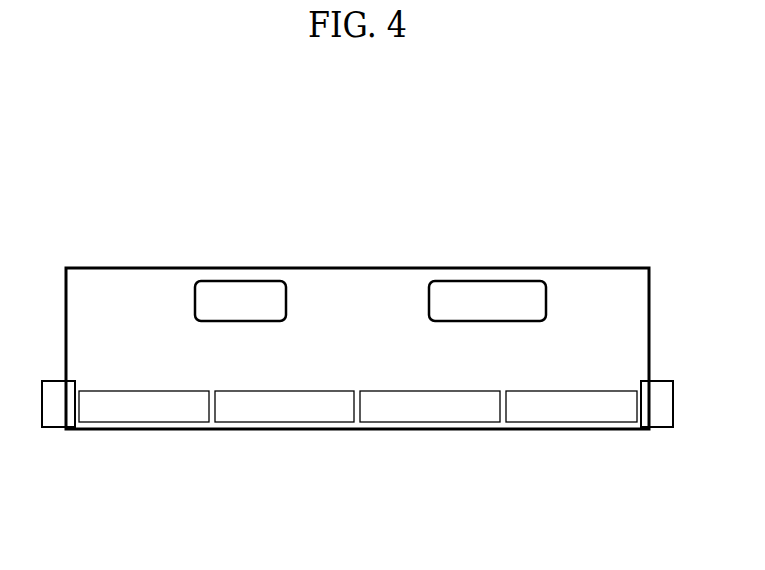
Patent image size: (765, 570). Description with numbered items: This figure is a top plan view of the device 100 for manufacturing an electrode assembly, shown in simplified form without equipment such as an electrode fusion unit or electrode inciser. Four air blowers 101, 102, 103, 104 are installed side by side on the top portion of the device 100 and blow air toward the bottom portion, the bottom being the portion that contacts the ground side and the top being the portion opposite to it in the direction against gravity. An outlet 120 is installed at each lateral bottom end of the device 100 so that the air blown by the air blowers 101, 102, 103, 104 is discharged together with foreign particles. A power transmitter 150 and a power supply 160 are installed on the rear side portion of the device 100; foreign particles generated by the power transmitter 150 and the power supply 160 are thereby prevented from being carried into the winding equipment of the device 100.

The device for manufacturing an electrode assembly 100 is at (110, 173).
The air blower 101 is at (143, 412).
The air blower 102 is at (288, 410).
The air blower 103 is at (431, 410).
The air blower 104 is at (571, 410).
The outlet 120 is at (55, 419).
The power transmitter 150 is at (242, 297).
The power supply 160 is at (487, 297).